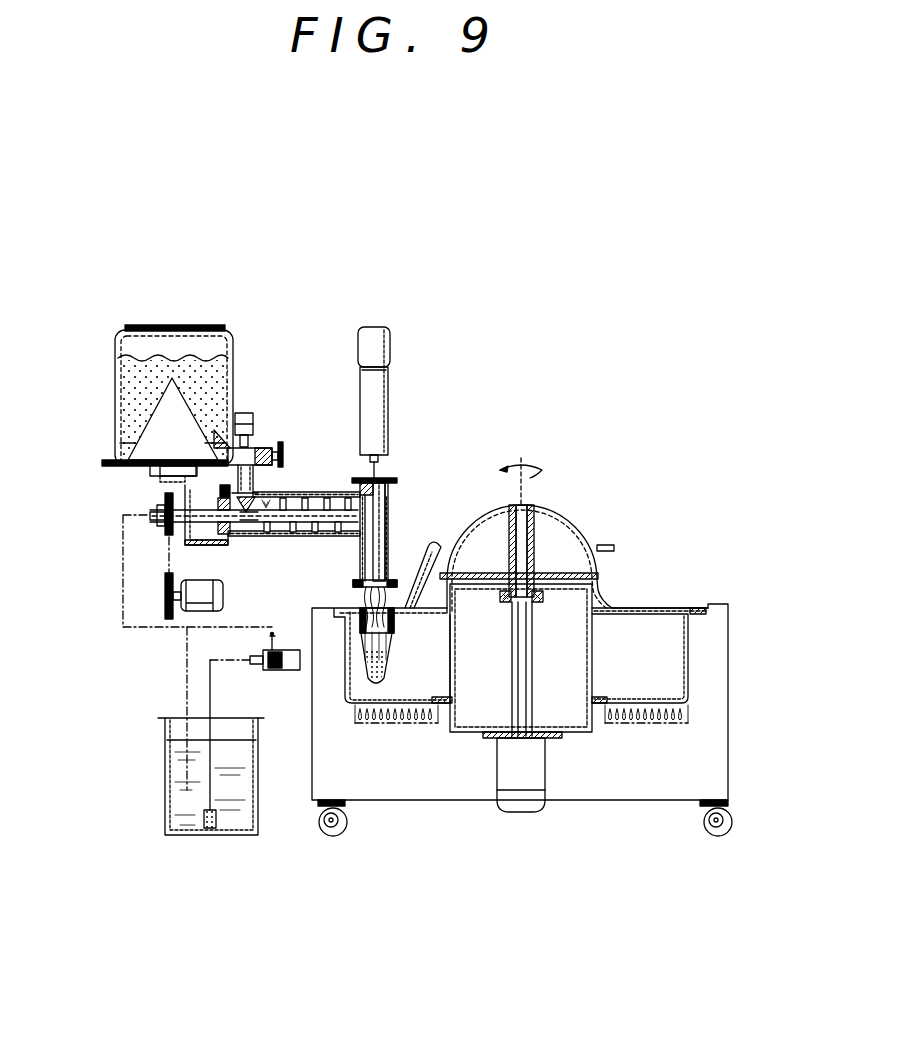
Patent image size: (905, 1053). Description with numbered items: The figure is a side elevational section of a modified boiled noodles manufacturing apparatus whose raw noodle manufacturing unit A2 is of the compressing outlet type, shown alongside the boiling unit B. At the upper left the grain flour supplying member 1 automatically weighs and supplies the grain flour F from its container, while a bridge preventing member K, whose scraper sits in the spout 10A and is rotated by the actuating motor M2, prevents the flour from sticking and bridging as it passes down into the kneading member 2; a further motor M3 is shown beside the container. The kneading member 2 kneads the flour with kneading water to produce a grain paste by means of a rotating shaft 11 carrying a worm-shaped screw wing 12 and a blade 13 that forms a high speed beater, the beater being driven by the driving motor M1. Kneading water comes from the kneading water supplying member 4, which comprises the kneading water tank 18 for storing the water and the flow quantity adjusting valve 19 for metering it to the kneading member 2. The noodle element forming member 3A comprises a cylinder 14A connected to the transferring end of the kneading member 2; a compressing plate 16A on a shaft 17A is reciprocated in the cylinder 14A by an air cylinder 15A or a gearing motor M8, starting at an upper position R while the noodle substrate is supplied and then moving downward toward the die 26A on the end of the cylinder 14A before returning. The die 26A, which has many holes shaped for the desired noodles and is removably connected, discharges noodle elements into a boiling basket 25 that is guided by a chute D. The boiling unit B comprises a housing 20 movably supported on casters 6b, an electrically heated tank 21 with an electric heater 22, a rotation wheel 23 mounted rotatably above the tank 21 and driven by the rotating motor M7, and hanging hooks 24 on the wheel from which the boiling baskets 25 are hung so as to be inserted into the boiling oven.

The flux hopper F is at (128, 380).
The grain flour supplying member 1 is at (233, 324).
The actuating motor M2 is at (250, 412).
The bridge preventing member K is at (266, 440).
The blade 13 is at (297, 468).
The spout 10A is at (278, 470).
The kneading member 2 is at (325, 491).
The screw wing 12 is at (233, 537).
The rotating shaft 11 is at (282, 523).
The shaft 17A is at (362, 546).
The die 26A is at (356, 598).
The motor M3 is at (190, 480).
The gearing motor M8 is at (378, 338).
The air cylinder 15A is at (388, 390).
The noodle element forming member 3A is at (394, 470).
The cylinder 14A is at (392, 530).
The compressing plate 16A is at (392, 580).
The upper position R is at (390, 491).
The chute D is at (413, 549).
The hanging hooks 24 is at (609, 545).
The rotation wheel 23 is at (600, 566).
The tank 21 is at (694, 640).
The boiling unit B is at (734, 645).
The housing 20 is at (718, 746).
The electric heater 22 is at (655, 724).
The casters 6b is at (722, 835).
The rotating motor M7 is at (522, 813).
The boiling basket 25 is at (390, 658).
The raw noodle manufacturing unit A2 is at (126, 601).
The driving motor M1 is at (160, 616).
The flow quantity adjusting valve 19 is at (268, 676).
The kneading water supplying member 4 is at (290, 680).
The kneading water tank 18 is at (165, 818).